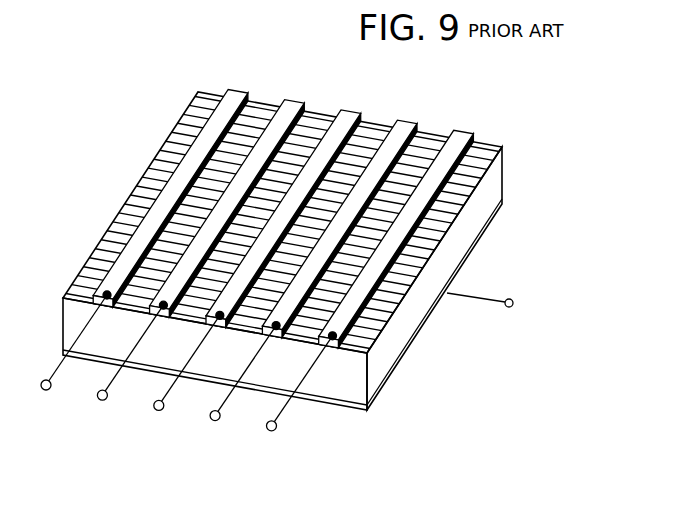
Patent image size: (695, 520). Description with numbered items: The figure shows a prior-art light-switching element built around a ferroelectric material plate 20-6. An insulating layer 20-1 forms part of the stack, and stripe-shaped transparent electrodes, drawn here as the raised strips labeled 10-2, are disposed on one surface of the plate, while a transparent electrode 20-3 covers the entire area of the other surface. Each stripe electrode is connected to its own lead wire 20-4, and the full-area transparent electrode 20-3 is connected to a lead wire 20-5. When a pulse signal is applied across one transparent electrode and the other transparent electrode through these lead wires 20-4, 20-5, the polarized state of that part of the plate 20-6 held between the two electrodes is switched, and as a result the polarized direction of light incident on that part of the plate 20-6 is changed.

The insulating layer 20-1 is at (208, 90).
The strip electrodes 10-2 is at (237, 86).
The transparent electrode 20-3 is at (473, 248).
The lead wire 20-4 is at (276, 428).
The lead wire 20-5 is at (507, 307).
The ferroelectric material plate 20-6 is at (405, 337).